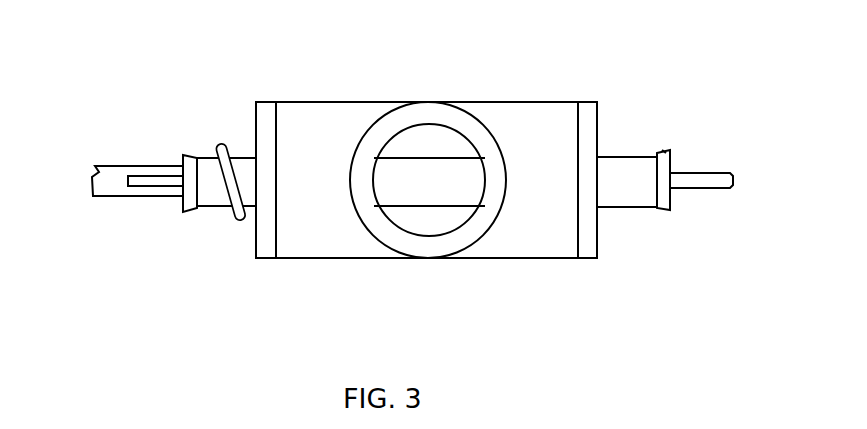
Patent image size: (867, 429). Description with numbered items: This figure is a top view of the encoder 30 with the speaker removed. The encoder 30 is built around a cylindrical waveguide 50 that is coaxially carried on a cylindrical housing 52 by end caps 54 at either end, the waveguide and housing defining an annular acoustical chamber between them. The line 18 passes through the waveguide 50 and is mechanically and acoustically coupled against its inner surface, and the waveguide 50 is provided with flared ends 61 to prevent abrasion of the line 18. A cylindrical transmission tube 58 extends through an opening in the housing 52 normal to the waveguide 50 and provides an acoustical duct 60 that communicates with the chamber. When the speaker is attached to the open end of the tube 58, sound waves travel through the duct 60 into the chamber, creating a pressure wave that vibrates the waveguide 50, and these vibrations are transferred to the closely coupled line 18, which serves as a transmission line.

The line 18 is at (177, 180).
The encoder 30 is at (412, 172).
The cylindrical waveguide 50 is at (213, 200).
The cylindrical housing 52 is at (352, 252).
The end caps 54 is at (265, 255).
The cylindrical transmission tube 58 is at (435, 115).
The acoustical duct 60 is at (437, 225).
The flared ends 61 is at (193, 152).